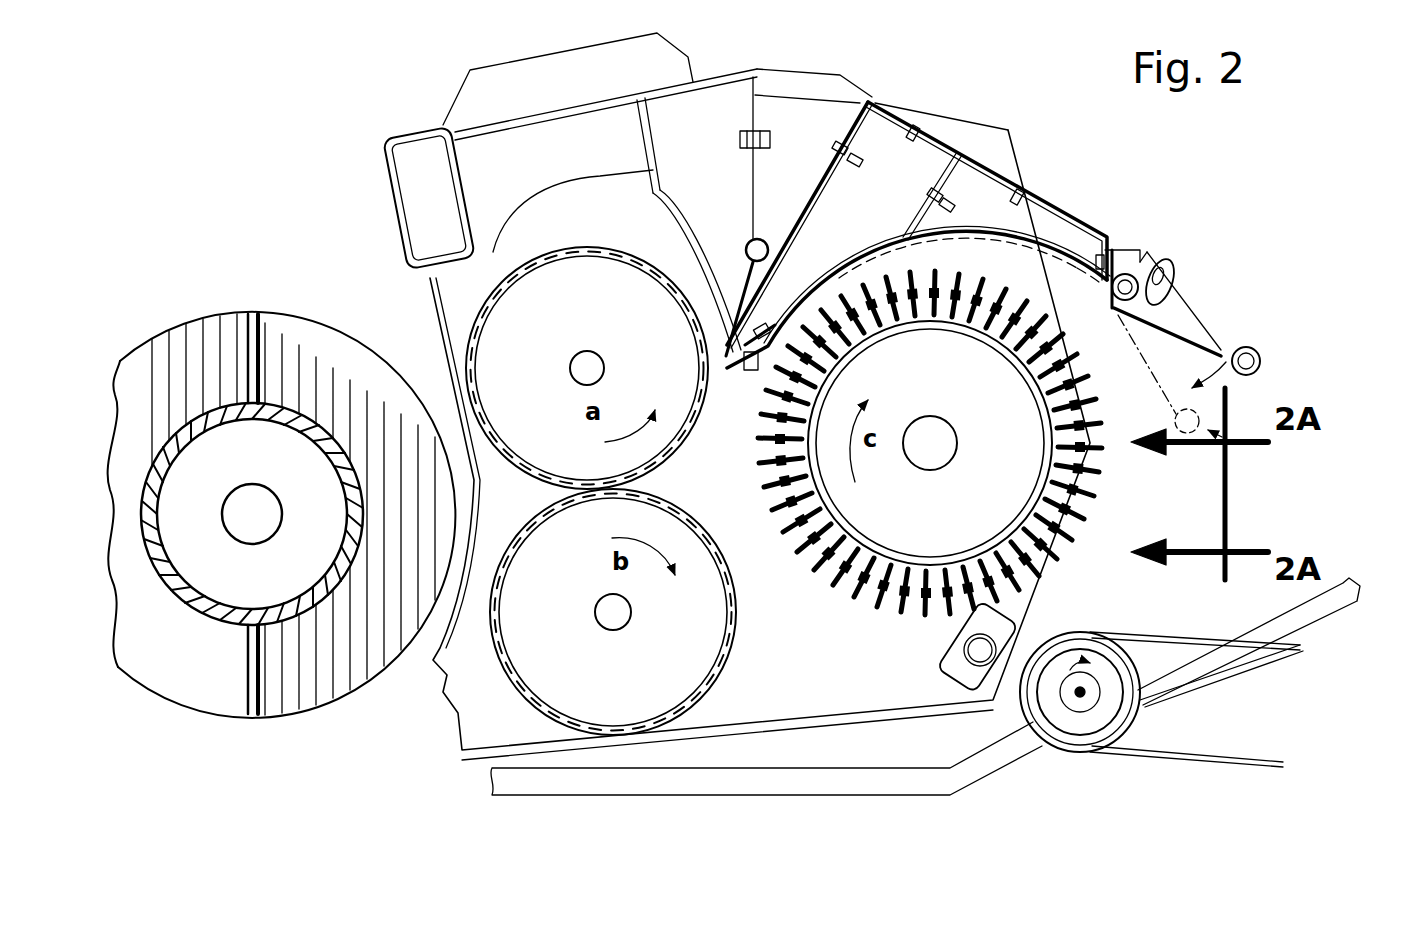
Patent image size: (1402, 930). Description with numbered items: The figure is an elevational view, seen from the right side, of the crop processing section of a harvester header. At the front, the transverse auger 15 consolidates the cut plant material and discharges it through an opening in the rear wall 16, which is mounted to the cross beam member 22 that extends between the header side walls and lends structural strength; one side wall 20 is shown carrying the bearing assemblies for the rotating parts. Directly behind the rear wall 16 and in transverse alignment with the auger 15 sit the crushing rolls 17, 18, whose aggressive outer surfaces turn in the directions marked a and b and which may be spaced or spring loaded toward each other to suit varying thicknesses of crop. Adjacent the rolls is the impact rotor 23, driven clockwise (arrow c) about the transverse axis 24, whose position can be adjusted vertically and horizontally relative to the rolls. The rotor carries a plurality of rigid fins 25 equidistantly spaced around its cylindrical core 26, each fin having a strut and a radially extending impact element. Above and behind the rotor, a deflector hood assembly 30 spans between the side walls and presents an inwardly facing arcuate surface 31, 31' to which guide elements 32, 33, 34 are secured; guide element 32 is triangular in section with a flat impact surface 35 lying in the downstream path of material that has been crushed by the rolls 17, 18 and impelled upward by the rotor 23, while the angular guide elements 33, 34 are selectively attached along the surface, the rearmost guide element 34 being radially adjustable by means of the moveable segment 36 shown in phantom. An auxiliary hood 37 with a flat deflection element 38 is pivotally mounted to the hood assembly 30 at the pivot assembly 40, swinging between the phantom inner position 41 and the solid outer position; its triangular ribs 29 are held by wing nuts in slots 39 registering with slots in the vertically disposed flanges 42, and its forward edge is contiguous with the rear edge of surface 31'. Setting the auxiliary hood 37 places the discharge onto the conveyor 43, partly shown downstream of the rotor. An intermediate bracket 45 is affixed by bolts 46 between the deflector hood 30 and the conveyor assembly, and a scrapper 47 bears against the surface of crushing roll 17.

The transverse auger 15 is at (210, 695).
The rear wall 16 is at (430, 312).
The crushing roll 17 is at (604, 247).
The crushing roll 18 is at (712, 694).
The side wall 20 is at (858, 668).
The cross beam member 22 is at (392, 128).
The impact rotor 23 is at (884, 628).
The transverse axis 24 is at (938, 458).
The rigid fins 25 is at (746, 468).
The cylindrical core 26 is at (906, 560).
The triangular ribs 29 is at (1236, 325).
The deflector hood assembly 30 is at (988, 147).
The inwardly facing arcuate surface 31 is at (918, 295).
The inwardly facing arcuate surface 31' is at (1069, 257).
The guide element 32 is at (742, 339).
The guide element 33 is at (892, 225).
The guide element 34 is at (1192, 302).
The flat impact surface 35 is at (750, 372).
The moveable segment 36 is at (1005, 220).
The auxiliary hood 37 is at (1245, 315).
The deflection element 38 is at (1258, 369).
The slots 39 is at (1175, 262).
The pivot assembly 40 is at (1132, 272).
The inner position 41 is at (1227, 443).
The flanges 42 is at (1120, 240).
The conveyor 43 is at (628, 148).
The intermediate bracket 45 is at (808, 105).
The bolts 46 is at (833, 150).
The scrapper 47 is at (720, 340).